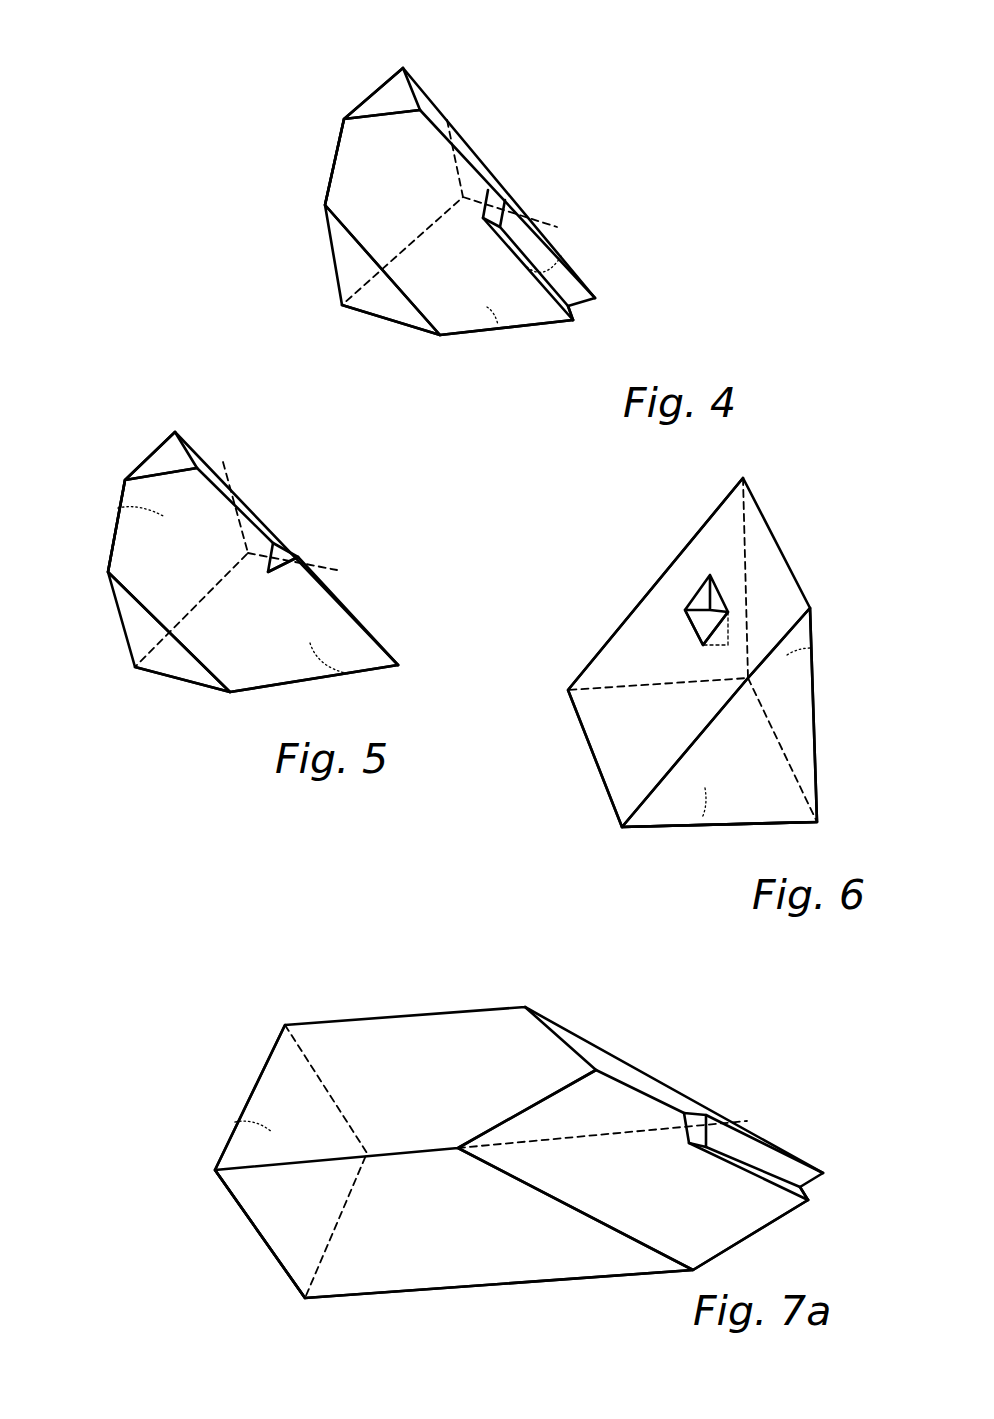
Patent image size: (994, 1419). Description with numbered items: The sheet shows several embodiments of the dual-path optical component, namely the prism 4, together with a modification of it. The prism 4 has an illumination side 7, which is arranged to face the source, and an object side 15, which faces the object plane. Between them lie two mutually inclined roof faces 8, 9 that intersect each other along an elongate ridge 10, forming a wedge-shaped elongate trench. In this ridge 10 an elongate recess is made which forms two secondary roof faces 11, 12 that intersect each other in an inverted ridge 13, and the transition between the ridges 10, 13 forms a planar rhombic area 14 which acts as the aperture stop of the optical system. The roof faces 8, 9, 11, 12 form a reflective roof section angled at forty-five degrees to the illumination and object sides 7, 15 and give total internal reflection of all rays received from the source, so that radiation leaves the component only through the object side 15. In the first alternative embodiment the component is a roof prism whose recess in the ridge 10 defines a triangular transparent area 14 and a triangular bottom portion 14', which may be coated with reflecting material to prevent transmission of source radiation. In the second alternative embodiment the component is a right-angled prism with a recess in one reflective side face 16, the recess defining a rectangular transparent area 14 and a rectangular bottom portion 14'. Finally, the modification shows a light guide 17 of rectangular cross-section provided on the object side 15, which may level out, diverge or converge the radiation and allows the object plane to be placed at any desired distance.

In FIG. 4, the prism 4 is at (315, 238).
In FIG. 5, the prism 4 is at (108, 643).
In FIG. 6, the prism 4 is at (840, 678).
In FIG. 7A, the prism 4 is at (400, 1000).
In FIG. 4, the illumination side 7 is at (498, 330).
In FIG. 5, the illumination side 7 is at (357, 674).
In FIG. 6, the illumination side 7 is at (700, 822).
In FIG. 4, the roof face 8 is at (463, 127).
In FIG. 5, the roof face 8 is at (243, 480).
In FIG. 7A, the roof face 8 is at (645, 1075).
In FIG. 4, the roof face 9 is at (353, 192).
In FIG. 5, the roof face 9 is at (130, 557).
In FIG. 7A, the roof face 9 is at (673, 1212).
In FIG. 4, the elongate ridge 10 is at (473, 155).
In FIG. 5, the elongate ridge 10 is at (263, 500).
In FIG. 7A, the elongate ridge 10 is at (668, 1095).
In FIG. 4, the secondary roof face 11 is at (568, 302).
In FIG. 7A, the secondary roof face 11 is at (812, 1192).
In FIG. 4, the secondary roof face 12 is at (567, 285).
In FIG. 7A, the secondary roof face 12 is at (826, 1176).
In FIG. 4, the inverted ridge 13 is at (535, 268).
In FIG. 7A, the inverted ridge 13 is at (745, 1162).
In FIG. 4, the rhombic area 14 is at (553, 169).
In FIG. 5, the rhombic area 14 is at (300, 514).
In FIG. 6, the rhombic area 14 is at (656, 610).
In FIG. 7A, the rhombic area 14 is at (745, 1099).
In FIG. 5, the bottom portion 14' is at (333, 533).
In FIG. 6, the bottom portion 14' is at (627, 627).
In FIG. 4, the object side 15 is at (342, 143).
In FIG. 5, the object side 15 is at (118, 508).
In FIG. 6, the object side 15 is at (813, 648).
In FIG. 7A, the object side 15 is at (235, 1122).
In FIG. 6, the side face 16 is at (760, 600).
In FIG. 7A, the light guide 17 is at (370, 1233).